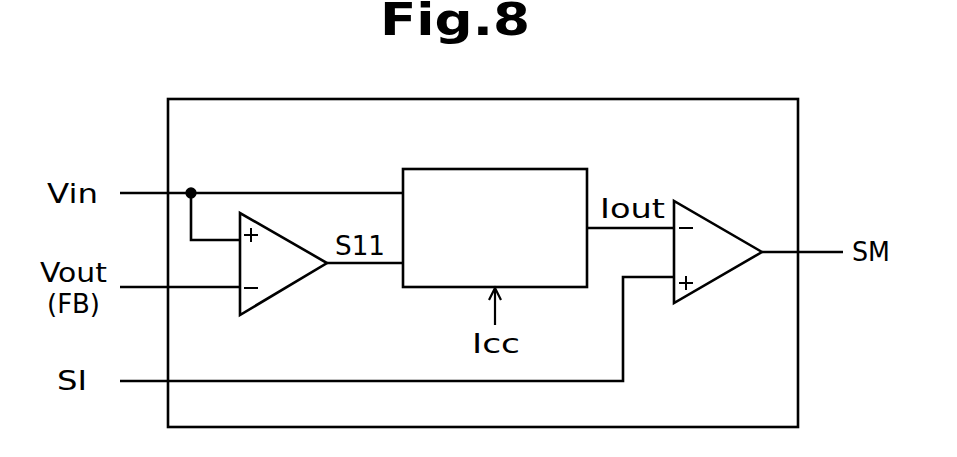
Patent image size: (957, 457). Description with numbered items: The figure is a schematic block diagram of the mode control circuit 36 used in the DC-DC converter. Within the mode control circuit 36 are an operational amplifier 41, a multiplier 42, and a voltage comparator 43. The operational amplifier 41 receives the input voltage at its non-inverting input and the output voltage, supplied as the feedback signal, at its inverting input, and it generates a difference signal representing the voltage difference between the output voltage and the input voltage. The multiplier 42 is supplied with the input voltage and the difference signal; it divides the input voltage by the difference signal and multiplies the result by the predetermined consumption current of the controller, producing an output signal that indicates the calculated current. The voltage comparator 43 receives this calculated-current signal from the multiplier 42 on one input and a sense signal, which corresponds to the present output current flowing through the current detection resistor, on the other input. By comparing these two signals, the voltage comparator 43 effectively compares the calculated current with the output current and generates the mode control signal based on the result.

The mode control circuit 36 is at (798, 133).
The operational amplifier 41 is at (267, 217).
The multiplier 42 is at (527, 169).
The voltage comparator 43 is at (722, 225).